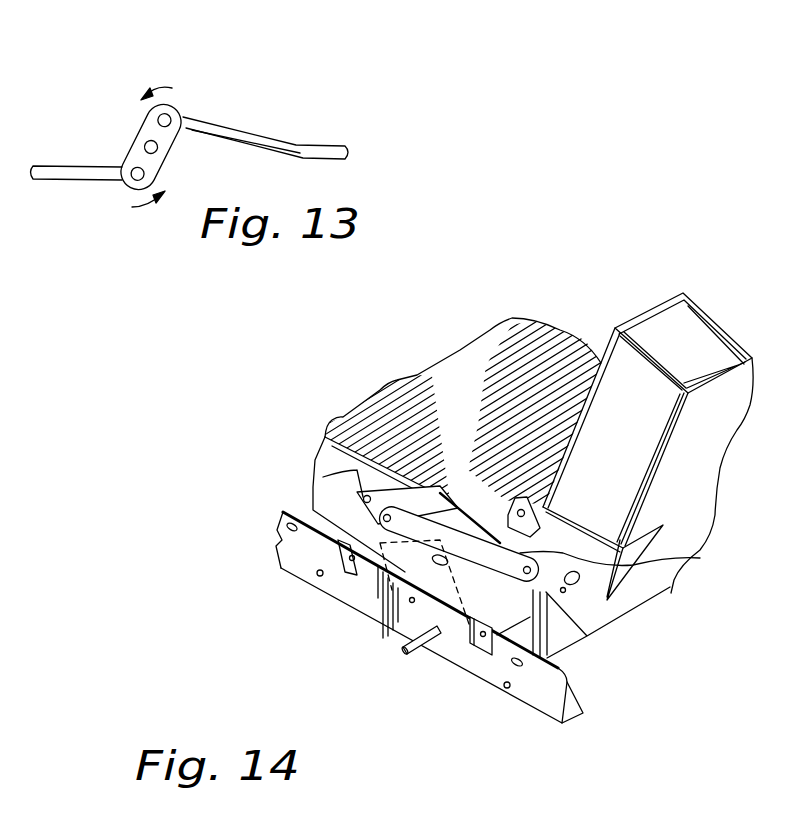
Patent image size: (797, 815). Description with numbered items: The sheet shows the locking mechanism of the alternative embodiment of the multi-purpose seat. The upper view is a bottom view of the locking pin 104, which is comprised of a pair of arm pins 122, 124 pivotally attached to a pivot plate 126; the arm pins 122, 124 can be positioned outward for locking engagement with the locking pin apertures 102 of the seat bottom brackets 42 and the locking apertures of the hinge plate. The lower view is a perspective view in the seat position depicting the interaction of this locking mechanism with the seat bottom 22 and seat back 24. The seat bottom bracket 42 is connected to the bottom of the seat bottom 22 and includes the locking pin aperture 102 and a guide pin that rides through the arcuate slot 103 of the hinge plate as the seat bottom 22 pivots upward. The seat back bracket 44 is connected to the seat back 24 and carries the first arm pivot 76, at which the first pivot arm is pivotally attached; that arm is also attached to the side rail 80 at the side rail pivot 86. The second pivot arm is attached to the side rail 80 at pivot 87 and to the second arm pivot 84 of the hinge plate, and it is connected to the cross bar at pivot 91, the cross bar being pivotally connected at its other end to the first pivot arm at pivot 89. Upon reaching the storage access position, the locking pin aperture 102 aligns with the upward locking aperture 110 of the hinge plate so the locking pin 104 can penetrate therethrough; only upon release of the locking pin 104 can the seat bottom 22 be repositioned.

In FIG. 14, the seat bottom 22 is at (508, 345).
In FIG. 14, the seat back 24 is at (680, 340).
In FIG. 14, the seat bottom bracket 42 is at (513, 612).
In FIG. 14, the seat back bracket 44 is at (600, 590).
In FIG. 14, the first arm pivot 76 is at (555, 487).
In FIG. 14, the side rail 80 is at (540, 700).
In FIG. 14, the second arm pivot 84 is at (445, 497).
In FIG. 14, the side rail pivot 86 is at (483, 632).
In FIG. 14, the pivot 87 is at (370, 587).
In FIG. 14, the pivot 89 is at (700, 558).
In FIG. 14, the pivot 91 is at (357, 505).
In FIG. 14, the locking pin aperture 102 is at (467, 600).
In FIG. 14, the arcuate slot 103 is at (385, 580).
In FIG. 13, the locking pin 104 is at (340, 44).
In FIG. 14, the locking pin 104 is at (403, 652).
In FIG. 14, the upward locking aperture 110 is at (305, 537).
In FIG. 13, the arm pin 122 is at (72, 180).
In FIG. 13, the arm pin 124 is at (294, 147).
In FIG. 13, the pivot plate 126 is at (184, 121).